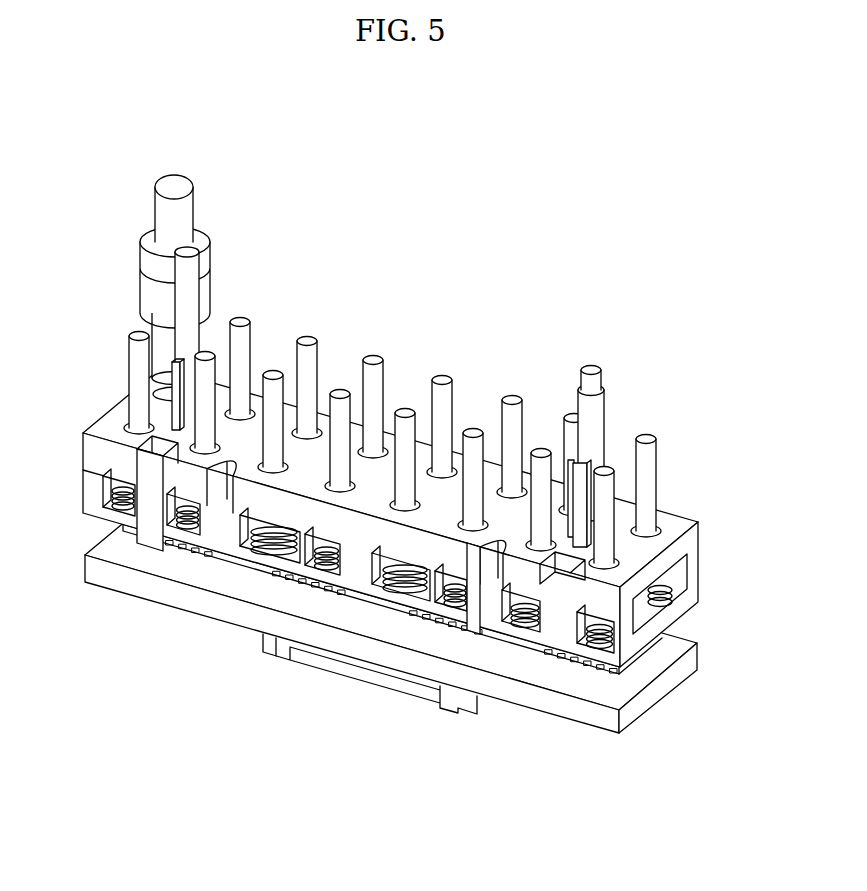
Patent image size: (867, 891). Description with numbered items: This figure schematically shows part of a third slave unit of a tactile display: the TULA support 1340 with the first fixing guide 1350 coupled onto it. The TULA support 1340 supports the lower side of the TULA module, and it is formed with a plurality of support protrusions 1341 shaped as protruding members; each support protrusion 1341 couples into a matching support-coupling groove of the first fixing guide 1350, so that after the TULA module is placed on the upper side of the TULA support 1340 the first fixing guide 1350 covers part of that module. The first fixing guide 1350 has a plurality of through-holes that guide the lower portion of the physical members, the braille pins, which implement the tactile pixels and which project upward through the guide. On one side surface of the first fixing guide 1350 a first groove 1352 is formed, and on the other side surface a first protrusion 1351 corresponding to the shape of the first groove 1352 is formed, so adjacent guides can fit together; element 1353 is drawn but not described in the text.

The TULA support 1340 is at (457, 618).
The support protrusion 1341 is at (149, 452).
The first fixing guide 1350 is at (708, 530).
The first protrusion 1351 is at (563, 486).
The first groove 1352 is at (486, 567).
The guide pin 1353 is at (598, 410).